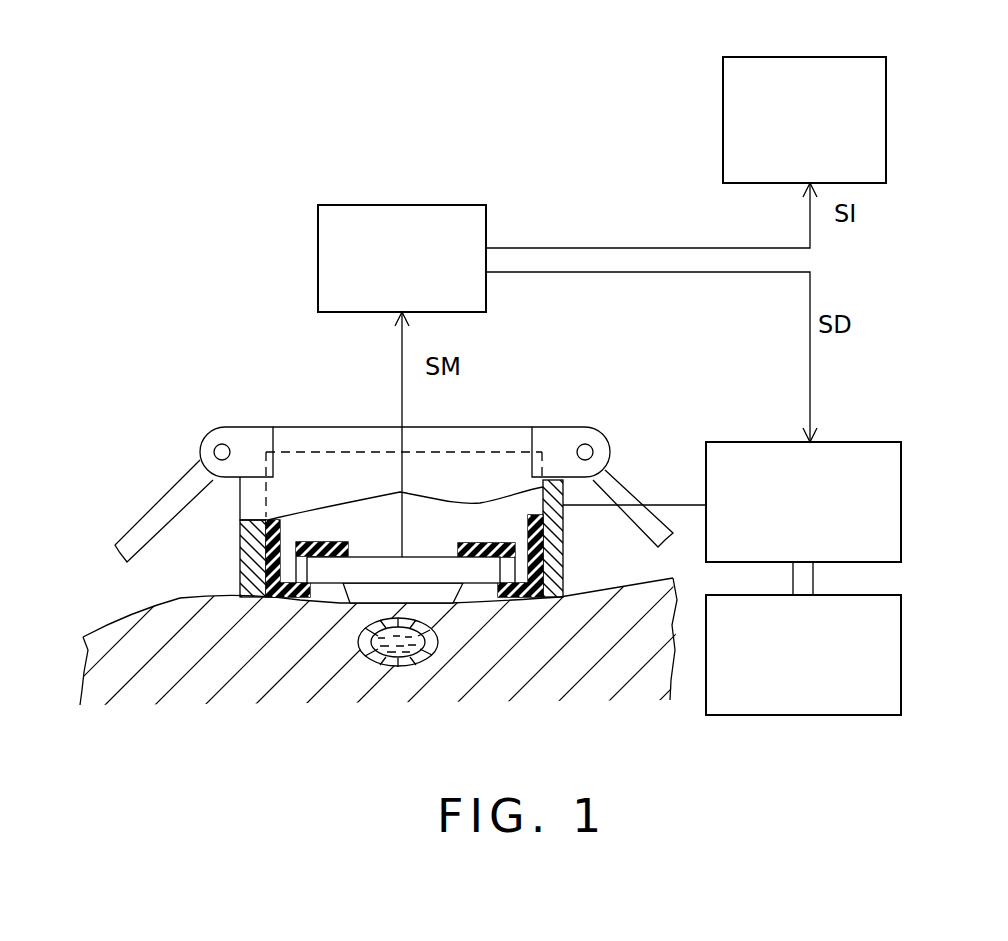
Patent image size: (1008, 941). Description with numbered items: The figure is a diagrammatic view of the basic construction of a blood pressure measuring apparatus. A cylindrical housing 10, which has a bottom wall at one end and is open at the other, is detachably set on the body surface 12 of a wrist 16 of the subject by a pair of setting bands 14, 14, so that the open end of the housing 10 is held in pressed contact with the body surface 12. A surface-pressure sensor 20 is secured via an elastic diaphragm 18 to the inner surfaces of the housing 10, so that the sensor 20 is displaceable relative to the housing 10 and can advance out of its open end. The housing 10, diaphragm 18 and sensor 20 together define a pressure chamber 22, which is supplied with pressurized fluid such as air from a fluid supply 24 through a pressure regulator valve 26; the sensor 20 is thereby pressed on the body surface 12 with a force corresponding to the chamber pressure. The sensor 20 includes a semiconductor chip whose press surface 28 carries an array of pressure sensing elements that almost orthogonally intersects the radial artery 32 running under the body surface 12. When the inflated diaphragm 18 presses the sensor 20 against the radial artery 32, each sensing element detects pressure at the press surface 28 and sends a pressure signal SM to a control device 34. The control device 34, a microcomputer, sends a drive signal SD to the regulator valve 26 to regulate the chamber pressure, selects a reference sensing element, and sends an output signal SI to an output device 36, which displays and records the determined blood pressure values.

The cylindrical housing 10 is at (240, 552).
The body surface 12 is at (133, 603).
The setting bands 14 is at (160, 511).
The wrist 16 is at (66, 660).
The elastic diaphragm 18 is at (270, 597).
The surface-pressure sensor 20 is at (347, 620).
The pressure chamber 22 is at (446, 534).
The fluid supply 24 is at (857, 706).
The pressure regulator valve 26 is at (873, 452).
The press surface 28 is at (440, 607).
The radial artery 32 is at (390, 667).
The control device 34 is at (406, 220).
The output device 36 is at (798, 66).